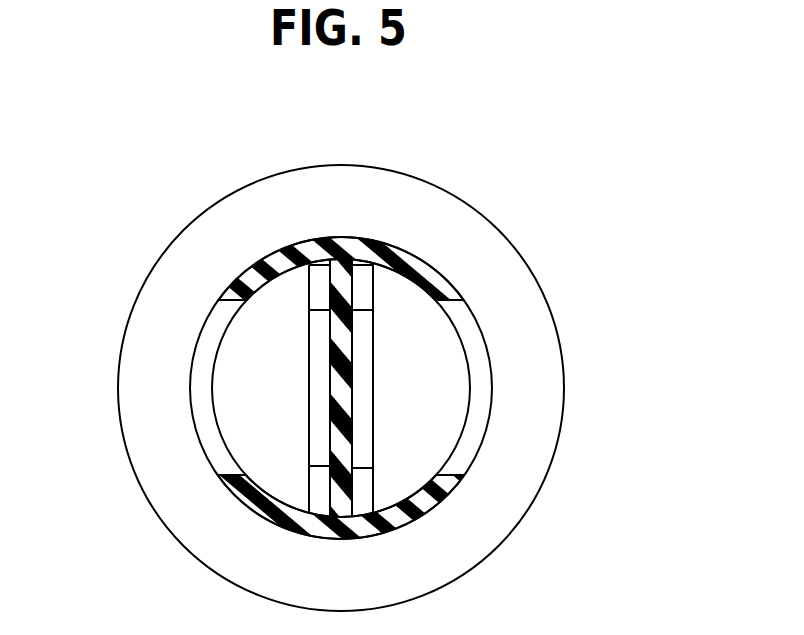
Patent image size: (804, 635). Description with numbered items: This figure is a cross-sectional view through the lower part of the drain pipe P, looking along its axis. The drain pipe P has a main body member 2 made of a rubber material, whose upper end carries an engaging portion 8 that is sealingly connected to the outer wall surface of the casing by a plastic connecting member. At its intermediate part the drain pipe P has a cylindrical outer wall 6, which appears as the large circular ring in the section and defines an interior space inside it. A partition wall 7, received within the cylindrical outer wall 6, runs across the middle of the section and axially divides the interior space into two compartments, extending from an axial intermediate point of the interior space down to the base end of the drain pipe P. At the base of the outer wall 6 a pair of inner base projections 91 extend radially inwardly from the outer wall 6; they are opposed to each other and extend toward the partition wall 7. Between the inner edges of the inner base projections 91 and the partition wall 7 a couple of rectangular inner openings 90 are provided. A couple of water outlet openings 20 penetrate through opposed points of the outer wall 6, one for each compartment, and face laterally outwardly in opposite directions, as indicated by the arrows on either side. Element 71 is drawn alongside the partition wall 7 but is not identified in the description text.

The main body member 2 is at (452, 193).
The engaging portion 8 is at (477, 228).
The cylindrical outer wall 6 is at (422, 273).
The inner base projections 91 is at (252, 341).
The rectangular inner openings 90 is at (322, 287).
The partition wall 7 is at (343, 369).
The side strip 71 is at (362, 410).
The water outlet openings 20 is at (202, 392).
The drain pipe P is at (95, 128).